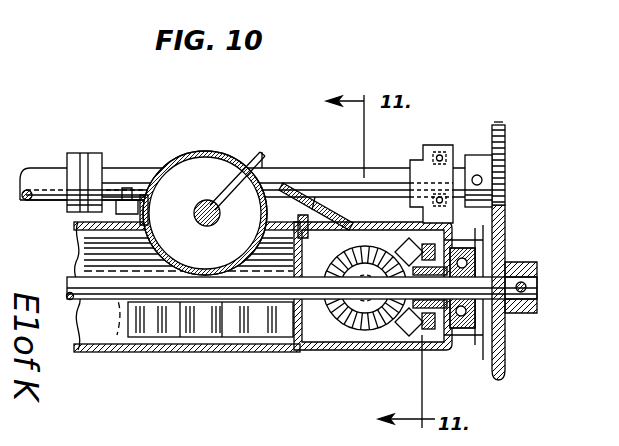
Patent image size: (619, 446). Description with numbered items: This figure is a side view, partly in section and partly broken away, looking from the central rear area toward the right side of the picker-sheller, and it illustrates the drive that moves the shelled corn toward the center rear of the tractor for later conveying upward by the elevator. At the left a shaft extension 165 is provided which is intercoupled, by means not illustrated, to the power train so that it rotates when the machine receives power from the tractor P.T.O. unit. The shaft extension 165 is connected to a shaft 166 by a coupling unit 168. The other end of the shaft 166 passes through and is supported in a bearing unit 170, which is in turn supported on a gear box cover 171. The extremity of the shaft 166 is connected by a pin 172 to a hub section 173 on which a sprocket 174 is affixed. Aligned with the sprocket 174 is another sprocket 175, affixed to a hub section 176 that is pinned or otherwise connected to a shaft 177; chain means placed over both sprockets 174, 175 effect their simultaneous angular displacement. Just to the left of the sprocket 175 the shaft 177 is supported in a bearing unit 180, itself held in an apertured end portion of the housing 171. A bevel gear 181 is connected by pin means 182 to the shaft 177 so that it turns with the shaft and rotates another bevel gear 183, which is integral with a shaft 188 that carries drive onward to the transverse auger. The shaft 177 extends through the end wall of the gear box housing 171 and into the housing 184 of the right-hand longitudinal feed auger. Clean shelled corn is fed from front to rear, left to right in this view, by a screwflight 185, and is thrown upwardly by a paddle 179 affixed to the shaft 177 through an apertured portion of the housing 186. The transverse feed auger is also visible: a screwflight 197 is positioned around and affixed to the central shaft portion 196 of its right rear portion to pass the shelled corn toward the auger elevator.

The shaft extension 165 is at (46, 182).
The shaft 166 is at (128, 178).
The coupling unit 168 is at (90, 165).
The bearing unit 170 is at (434, 148).
The gear box cover 171 is at (426, 352).
The pin 172 is at (505, 182).
The hub section 173 is at (478, 160).
The sprocket 174 is at (503, 132).
The sprocket 175 is at (503, 358).
The hub section 176 is at (522, 313).
The shaft 177 is at (520, 282).
The paddle 179 is at (215, 332).
The bearing unit 180 is at (460, 323).
The bevel gear 181 is at (400, 337).
The pin means 182 is at (448, 248).
The bevel gear 183 is at (360, 338).
The housing 184 is at (163, 352).
The screwflight 185 is at (114, 348).
The housing 186 is at (221, 155).
The shaft 188 is at (372, 223).
The central shaft portion 196 is at (202, 200).
The screwflight 197 is at (232, 182).